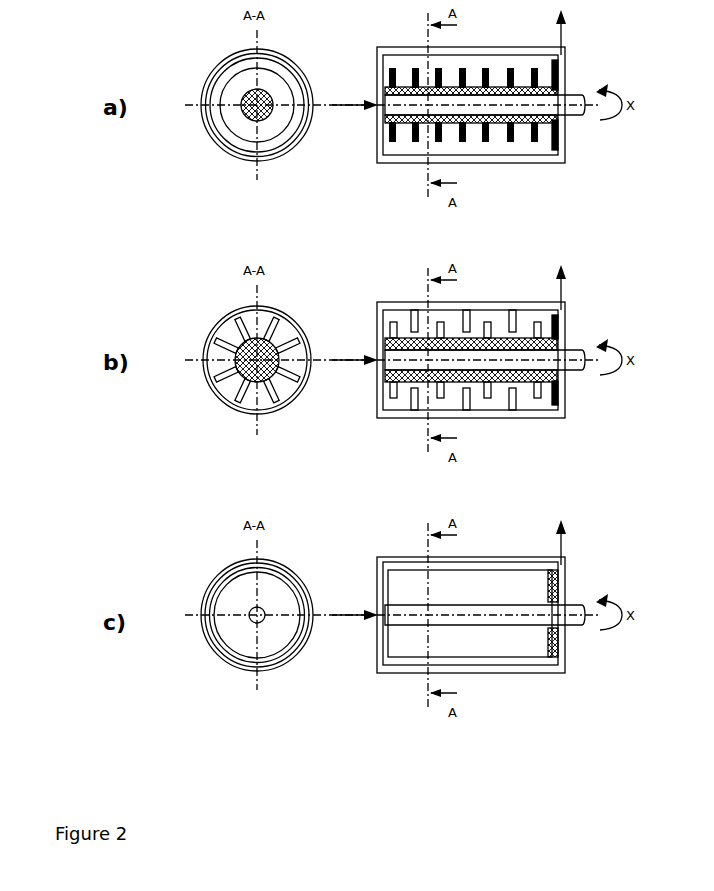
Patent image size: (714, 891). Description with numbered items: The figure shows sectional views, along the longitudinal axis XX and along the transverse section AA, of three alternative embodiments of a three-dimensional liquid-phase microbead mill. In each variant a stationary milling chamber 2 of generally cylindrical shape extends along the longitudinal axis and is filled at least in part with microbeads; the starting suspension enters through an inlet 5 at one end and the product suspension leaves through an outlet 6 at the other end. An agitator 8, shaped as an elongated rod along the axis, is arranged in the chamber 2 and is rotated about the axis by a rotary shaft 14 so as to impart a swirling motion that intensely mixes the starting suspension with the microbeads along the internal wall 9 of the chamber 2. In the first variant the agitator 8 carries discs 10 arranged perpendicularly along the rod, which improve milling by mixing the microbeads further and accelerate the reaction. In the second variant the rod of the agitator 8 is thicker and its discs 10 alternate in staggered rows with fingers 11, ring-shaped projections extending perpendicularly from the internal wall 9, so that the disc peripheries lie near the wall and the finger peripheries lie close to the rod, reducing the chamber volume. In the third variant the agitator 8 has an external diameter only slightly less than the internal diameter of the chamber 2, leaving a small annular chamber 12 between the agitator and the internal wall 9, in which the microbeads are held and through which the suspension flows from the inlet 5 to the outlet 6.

The stationary milling chamber 2 is at (515, 163).
The inlet 5 is at (362, 108).
The outlet 6 is at (565, 27).
The agitator 8 is at (241, 110).
The internal wall 9 is at (204, 116).
The discs 10 is at (232, 88).
The fingers 11 is at (226, 326).
The annular chamber 12 is at (276, 563).
The rotary shaft 14 is at (268, 70).